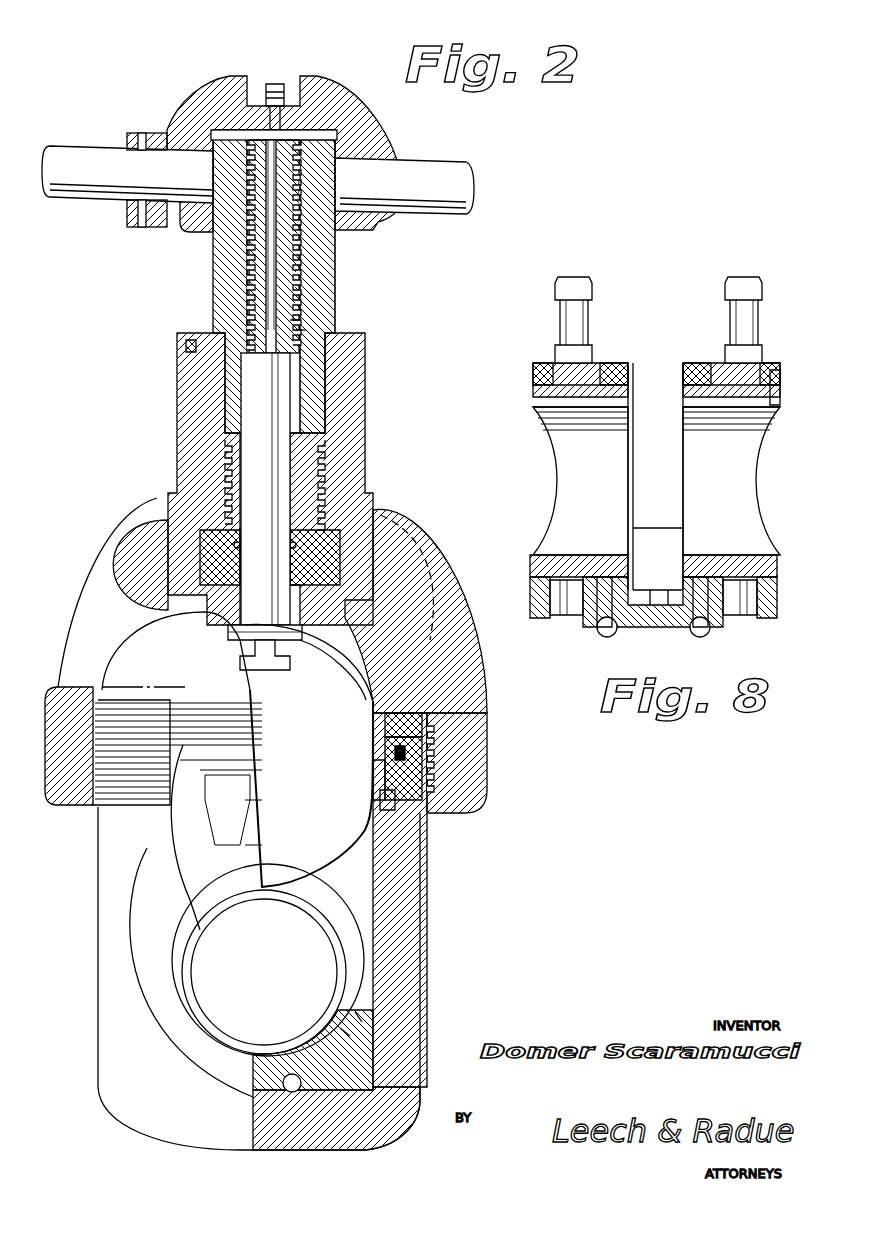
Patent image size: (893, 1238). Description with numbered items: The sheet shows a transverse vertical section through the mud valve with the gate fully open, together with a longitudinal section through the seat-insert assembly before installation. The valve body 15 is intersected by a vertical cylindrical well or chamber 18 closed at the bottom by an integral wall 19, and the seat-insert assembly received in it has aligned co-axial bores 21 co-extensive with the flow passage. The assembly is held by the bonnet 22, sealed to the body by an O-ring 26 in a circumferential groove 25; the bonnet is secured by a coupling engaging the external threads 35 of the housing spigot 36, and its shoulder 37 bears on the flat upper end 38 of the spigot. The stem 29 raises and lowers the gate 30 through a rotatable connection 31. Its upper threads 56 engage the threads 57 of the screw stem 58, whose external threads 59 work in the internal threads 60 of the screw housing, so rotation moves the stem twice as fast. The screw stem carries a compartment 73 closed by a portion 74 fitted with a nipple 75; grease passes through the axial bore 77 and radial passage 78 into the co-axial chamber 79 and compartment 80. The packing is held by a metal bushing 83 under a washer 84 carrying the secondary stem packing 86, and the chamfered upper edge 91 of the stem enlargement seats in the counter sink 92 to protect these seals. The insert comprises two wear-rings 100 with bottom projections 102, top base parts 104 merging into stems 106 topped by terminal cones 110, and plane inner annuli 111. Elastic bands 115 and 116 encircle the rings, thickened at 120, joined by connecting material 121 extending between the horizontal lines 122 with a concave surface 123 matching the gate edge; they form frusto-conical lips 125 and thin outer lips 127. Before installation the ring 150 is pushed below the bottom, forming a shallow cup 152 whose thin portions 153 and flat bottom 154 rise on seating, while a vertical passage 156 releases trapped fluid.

In FIG. 2, the body 15 is at (422, 922).
In FIG. 2, the well or chamber 18 is at (396, 892).
In FIG. 2, the integral wall 19 is at (332, 1106).
In FIG. 2, the co-axial bores 21 is at (264, 972).
In FIG. 2, the bonnet 22 is at (222, 771).
In FIG. 2, the circumferential channel or groove 25 is at (390, 770).
In FIG. 2, the O-ring 26 is at (402, 760).
In FIG. 2, the stem 29 is at (265, 489).
In FIG. 2, the gate 30 is at (276, 755).
In FIG. 2, the rotatable connection 31 is at (246, 664).
In FIG. 2, the external threads 35 is at (126, 800).
In FIG. 2, the housing spigot 36 is at (392, 796).
In FIG. 2, the shoulder 37 is at (388, 723).
In FIG. 2, the flat upper end 38 is at (390, 745).
In FIG. 2, the threads 56 is at (250, 262).
In FIG. 2, the threads 57 is at (302, 264).
In FIG. 2, the screw stem 58 is at (326, 276).
In FIG. 2, the external threads 59 is at (196, 385).
In FIG. 2, the internal threads 60 is at (178, 424).
In FIG. 2, the compartment 73 is at (330, 104).
In FIG. 2, the portion 74 is at (240, 100).
In FIG. 2, the nipple 75 is at (286, 96).
In FIG. 2, the axial bore 77 is at (270, 182).
In FIG. 2, the radial passage 78 is at (296, 326).
In FIG. 2, the co-axial chamber 79 is at (302, 334).
In FIG. 2, the compartment 80 is at (315, 485).
In FIG. 2, the metal bushing 83 is at (290, 588).
In FIG. 2, the washer 84 is at (300, 543).
In FIG. 2, the secondary stem packing 86 is at (236, 541).
In FIG. 2, the chamfered upper edge 91 is at (326, 656).
In FIG. 2, the counter sink 92 is at (228, 632).
In FIG. 2, the wear-rings 100 is at (246, 898).
In FIG. 8, the wear-rings 100 is at (656, 481).
In FIG. 8, the projections 102 is at (540, 614).
In FIG. 8, the cylindrical base parts 104 is at (782, 377).
In FIG. 8, the stems 106 is at (764, 323).
In FIG. 8, the truncated terminal cones 110 is at (590, 286).
In FIG. 8, the circular annuli 111 is at (690, 392).
In FIG. 8, the band of elastic material 115 is at (612, 362).
In FIG. 8, the band of elastic material 116 is at (705, 363).
In FIG. 2, the thickened material 120 is at (342, 1096).
In FIG. 8, the connecting material 121 is at (652, 628).
In FIG. 2, the horizontal lines 122 is at (360, 1018).
In FIG. 8, the horizontal lines 122 is at (655, 528).
In FIG. 2, the connecting concave surface 123 is at (345, 1033).
In FIG. 8, the connecting concave surface 123 is at (642, 466).
In FIG. 8, the frusto-conical faces 125 is at (640, 385).
In FIG. 8, the lips 127 is at (540, 362).
In FIG. 8, the ring 150 is at (566, 606).
In FIG. 8, the shallow cup 152 is at (698, 624).
In FIG. 8, the thin portions 153 is at (742, 615).
In FIG. 8, the flat bottom 154 is at (608, 628).
In FIG. 8, the vertical passage 156 is at (650, 588).